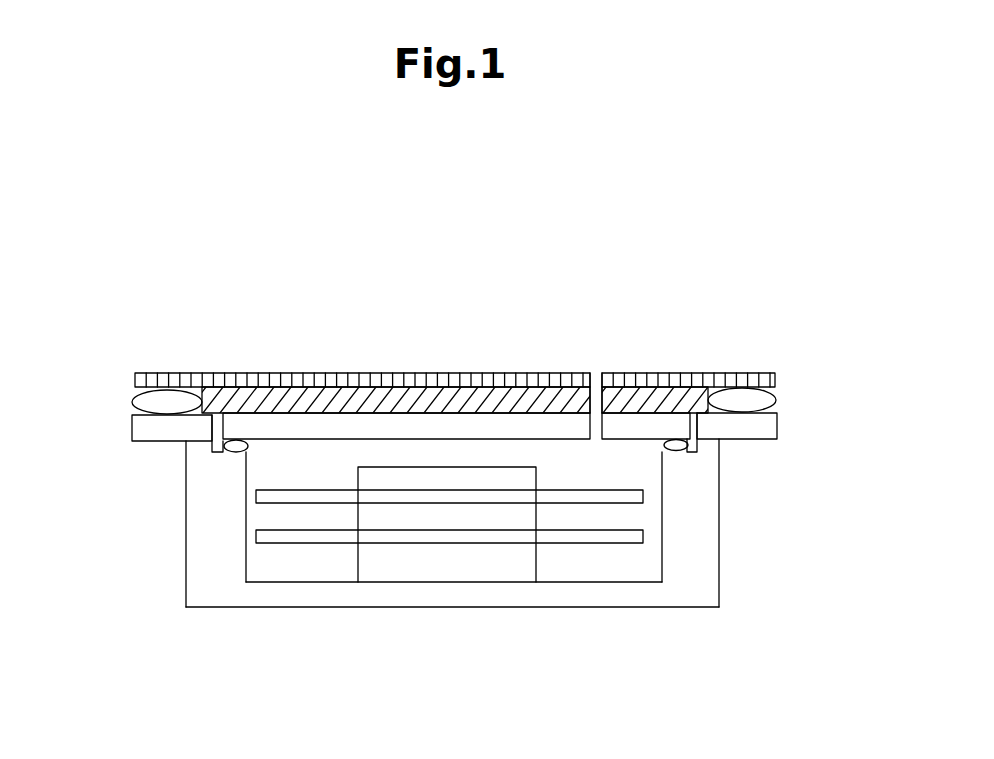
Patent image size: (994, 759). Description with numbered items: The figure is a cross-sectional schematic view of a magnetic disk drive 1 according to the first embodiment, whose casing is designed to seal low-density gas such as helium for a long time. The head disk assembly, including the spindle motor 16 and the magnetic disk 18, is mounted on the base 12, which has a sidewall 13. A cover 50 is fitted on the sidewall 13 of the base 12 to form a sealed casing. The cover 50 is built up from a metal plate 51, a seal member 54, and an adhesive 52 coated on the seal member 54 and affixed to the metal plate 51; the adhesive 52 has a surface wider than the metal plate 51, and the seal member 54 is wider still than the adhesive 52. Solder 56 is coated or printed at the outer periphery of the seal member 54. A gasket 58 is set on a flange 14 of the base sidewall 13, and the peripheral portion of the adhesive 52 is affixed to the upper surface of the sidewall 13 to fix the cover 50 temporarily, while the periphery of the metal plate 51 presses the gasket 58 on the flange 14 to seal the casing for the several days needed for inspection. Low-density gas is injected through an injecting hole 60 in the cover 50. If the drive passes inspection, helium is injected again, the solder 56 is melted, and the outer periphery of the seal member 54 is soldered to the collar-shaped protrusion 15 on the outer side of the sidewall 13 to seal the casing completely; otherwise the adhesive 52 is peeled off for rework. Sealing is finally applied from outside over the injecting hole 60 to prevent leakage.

The magnetic disk drive 1 is at (727, 312).
The base 12 is at (356, 595).
The sidewall 13 is at (185, 524).
The flange 14 is at (232, 456).
The collar-shaped protrusion 15 is at (156, 431).
The spindle motor 16 is at (506, 565).
The magnetic disk 18 is at (587, 537).
The cover 50 is at (370, 352).
The metal plate 51 is at (530, 427).
The adhesive 52 is at (288, 400).
The seal member 54 is at (488, 372).
The solder 56 is at (145, 403).
The gasket 58 is at (248, 444).
The injecting hole 60 is at (596, 370).